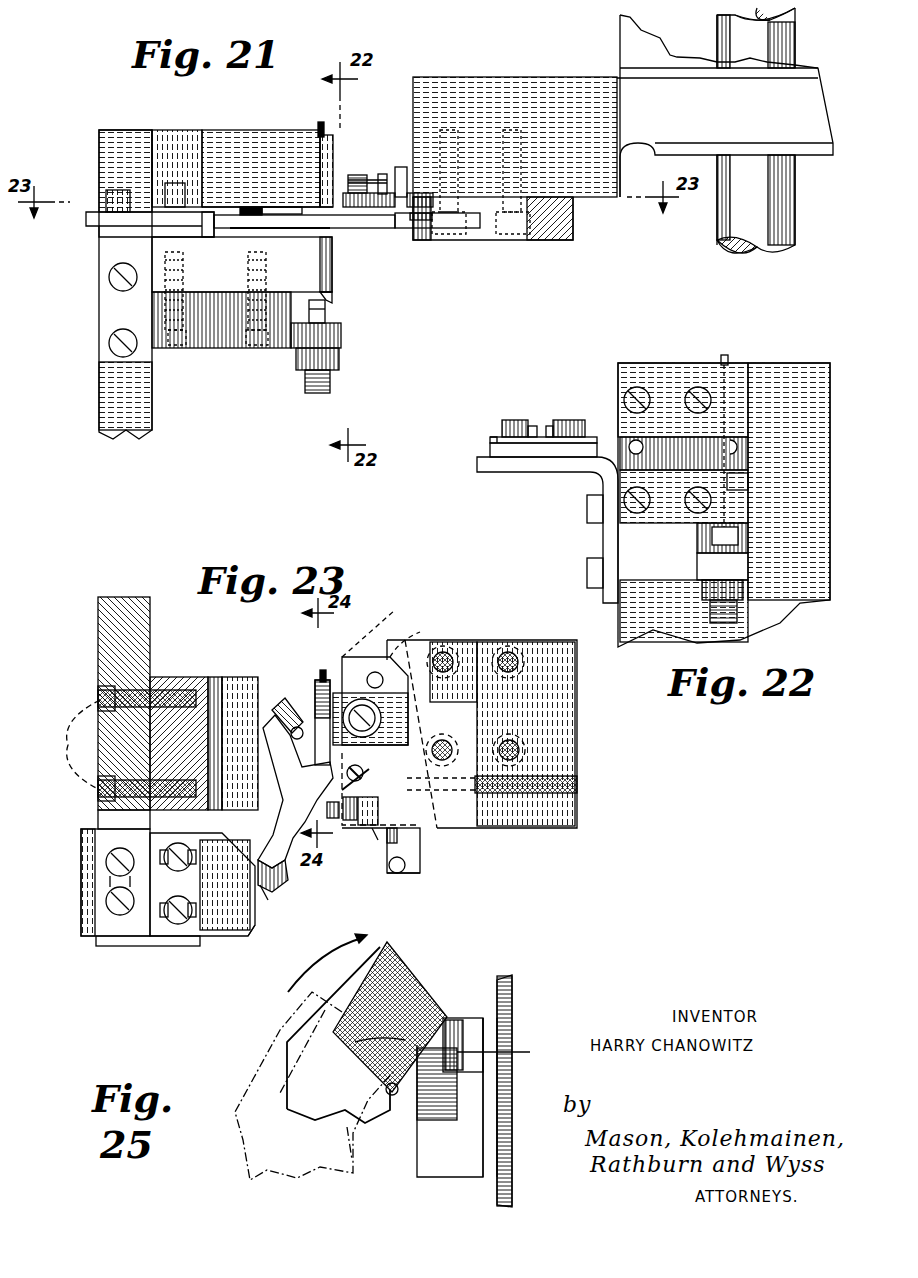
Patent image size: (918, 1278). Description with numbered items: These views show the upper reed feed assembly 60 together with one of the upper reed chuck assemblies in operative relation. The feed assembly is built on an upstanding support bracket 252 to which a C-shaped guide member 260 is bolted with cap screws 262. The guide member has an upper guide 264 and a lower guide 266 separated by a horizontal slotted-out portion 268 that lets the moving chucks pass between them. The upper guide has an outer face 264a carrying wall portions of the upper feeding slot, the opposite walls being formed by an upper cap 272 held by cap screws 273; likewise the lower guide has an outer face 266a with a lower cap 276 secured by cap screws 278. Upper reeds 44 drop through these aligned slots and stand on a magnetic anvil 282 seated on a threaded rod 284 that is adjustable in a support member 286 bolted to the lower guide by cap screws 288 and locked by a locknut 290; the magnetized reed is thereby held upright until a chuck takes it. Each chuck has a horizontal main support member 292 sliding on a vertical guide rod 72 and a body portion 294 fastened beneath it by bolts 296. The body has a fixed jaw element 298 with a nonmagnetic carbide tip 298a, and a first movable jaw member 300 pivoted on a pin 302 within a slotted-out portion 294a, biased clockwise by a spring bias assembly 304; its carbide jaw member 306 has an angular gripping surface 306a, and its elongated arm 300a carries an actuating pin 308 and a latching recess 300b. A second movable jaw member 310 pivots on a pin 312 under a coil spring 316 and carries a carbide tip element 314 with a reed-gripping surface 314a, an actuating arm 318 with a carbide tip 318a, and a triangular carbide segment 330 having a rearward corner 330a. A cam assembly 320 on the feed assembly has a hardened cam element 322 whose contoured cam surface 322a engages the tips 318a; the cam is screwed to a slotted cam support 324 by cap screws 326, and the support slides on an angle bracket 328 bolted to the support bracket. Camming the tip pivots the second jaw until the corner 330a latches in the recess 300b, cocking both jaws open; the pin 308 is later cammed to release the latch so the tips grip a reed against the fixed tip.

In FIG. 21, the upper reed 44 is at (320, 122).
In FIG. 22, the upper reed 44 is at (728, 355).
In FIG. 23, the upper reed 44 is at (322, 670).
In FIG. 25, the upper reed 44 is at (506, 1048).
In FIG. 21, the upper reed feed assembly 60 is at (192, 408).
In FIG. 21, the vertical guide rod 72 is at (735, 232).
In FIG. 21, the support bracket 252 is at (100, 418).
In FIG. 22, the support bracket 252 is at (790, 625).
In FIG. 23, the support bracket 252 is at (110, 600).
In FIG. 21, the guide member 260 is at (205, 145).
In FIG. 22, the guide member 260 is at (665, 370).
In FIG. 23, the guide member 260 is at (202, 680).
In FIG. 22, the cap screws 262 is at (628, 447).
In FIG. 23, the cap screws 262 is at (118, 743).
In FIG. 21, the upper guide 264 is at (235, 130).
In FIG. 21, the outer face of upper guide 264a is at (318, 135).
In FIG. 21, the lower guide 266 is at (205, 295).
In FIG. 23, the lower guide 266 is at (232, 677).
In FIG. 21, the outer face of lower guide 266a is at (332, 294).
In FIG. 21, the slotted-out portion 268 is at (208, 237).
In FIG. 22, the slotted-out portion 268 is at (750, 458).
In FIG. 23, the slotted-out portion 268 is at (216, 677).
In FIG. 21, the upper head or cap 272 is at (332, 142).
In FIG. 22, the upper head or cap 272 is at (760, 372).
In FIG. 22, the cap screws 273 is at (705, 403).
In FIG. 21, the lower cap or head 276 is at (332, 262).
In FIG. 22, the lower cap or head 276 is at (748, 480).
In FIG. 22, the cap screws 278 is at (702, 506).
In FIG. 21, the magnetic anvil 282 is at (326, 310).
In FIG. 22, the magnetic anvil 282 is at (705, 536).
In FIG. 21, the threaded rod 284 is at (330, 383).
In FIG. 22, the threaded rod 284 is at (737, 612).
In FIG. 21, the support member 286 is at (285, 350).
In FIG. 22, the support member 286 is at (748, 566).
In FIG. 21, the cap screws 288 is at (175, 350).
In FIG. 21, the locknut 290 is at (340, 360).
In FIG. 22, the locknut 290 is at (743, 590).
In FIG. 21, the main support member 292 is at (590, 60).
In FIG. 21, the body portion 294 is at (565, 237).
In FIG. 23, the body portion 294 is at (577, 760).
In FIG. 25, the body portion 294 is at (512, 1000).
In FIG. 21, the slotted-out portion of body 294a is at (455, 220).
In FIG. 23, the slotted-out portion of body 294a is at (422, 630).
In FIG. 21, the bolts 296 is at (512, 130).
In FIG. 23, the bolts 296 is at (450, 668).
In FIG. 23, the jaw element 298 is at (342, 685).
In FIG. 25, the jaw element 298 is at (498, 1018).
In FIG. 25, the nonmagnetic carbide tip 298a is at (455, 1020).
In FIG. 21, the first movable jaw member 300 is at (400, 222).
In FIG. 23, the first movable jaw member 300 is at (420, 856).
In FIG. 25, the first movable jaw member 300 is at (475, 1178).
In FIG. 21, the elongated arm 300a is at (418, 220).
In FIG. 23, the elongated arm 300a is at (420, 866).
In FIG. 23, the recess 300b is at (430, 826).
In FIG. 23, the pin 302 is at (381, 628).
In FIG. 23, the spring bias assembly 304 is at (522, 828).
In FIG. 23, the jaw member 306 is at (316, 690).
In FIG. 25, the jaw member 306 is at (430, 1110).
In FIG. 25, the gripping surface 306a is at (385, 1040).
In FIG. 21, the actuating pin 308 is at (398, 168).
In FIG. 23, the actuating pin 308 is at (399, 873).
In FIG. 23, the second movable jaw member 310 is at (272, 765).
In FIG. 25, the second movable jaw member 310 is at (280, 1064).
In FIG. 21, the pin 312 is at (355, 176).
In FIG. 23, the pin 312 is at (350, 820).
In FIG. 23, the carbide tip element 314 is at (272, 716).
In FIG. 25, the carbide tip element 314 is at (425, 960).
In FIG. 23, the reed-gripping surface 314a is at (291, 736).
In FIG. 25, the reed-gripping surface 314a is at (385, 1088).
In FIG. 21, the coil spring 316 is at (366, 174).
In FIG. 23, the coil spring 316 is at (347, 776).
In FIG. 21, the actuating arm 318 is at (248, 215).
In FIG. 23, the actuating arm 318 is at (300, 860).
In FIG. 21, the carbide tip 318a is at (282, 207).
In FIG. 23, the carbide tip 318a is at (268, 898).
In FIG. 22, the cam assembly 320 is at (505, 500).
In FIG. 23, the cam assembly 320 is at (186, 976).
In FIG. 22, the cam element 322 is at (510, 420).
In FIG. 23, the cam element 322 is at (228, 936).
In FIG. 22, the cam surface 322a is at (490, 440).
In FIG. 23, the cam surface 322a is at (252, 932).
In FIG. 21, the cam support 324 is at (86, 224).
In FIG. 22, the cam support 324 is at (492, 450).
In FIG. 23, the cam support 324 is at (81, 915).
In FIG. 21, the cap screws 326 is at (165, 190).
In FIG. 22, the cap screws 326 is at (572, 420).
In FIG. 23, the cap screws 326 is at (176, 925).
In FIG. 21, the angle bracket 328 is at (100, 265).
In FIG. 22, the angle bracket 328 is at (480, 465).
In FIG. 23, the angle bracket 328 is at (112, 948).
In FIG. 21, the triangular segment 330 is at (330, 222).
In FIG. 23, the triangular segment 330 is at (365, 828).
In FIG. 23, the rearward corner 330a is at (380, 845).